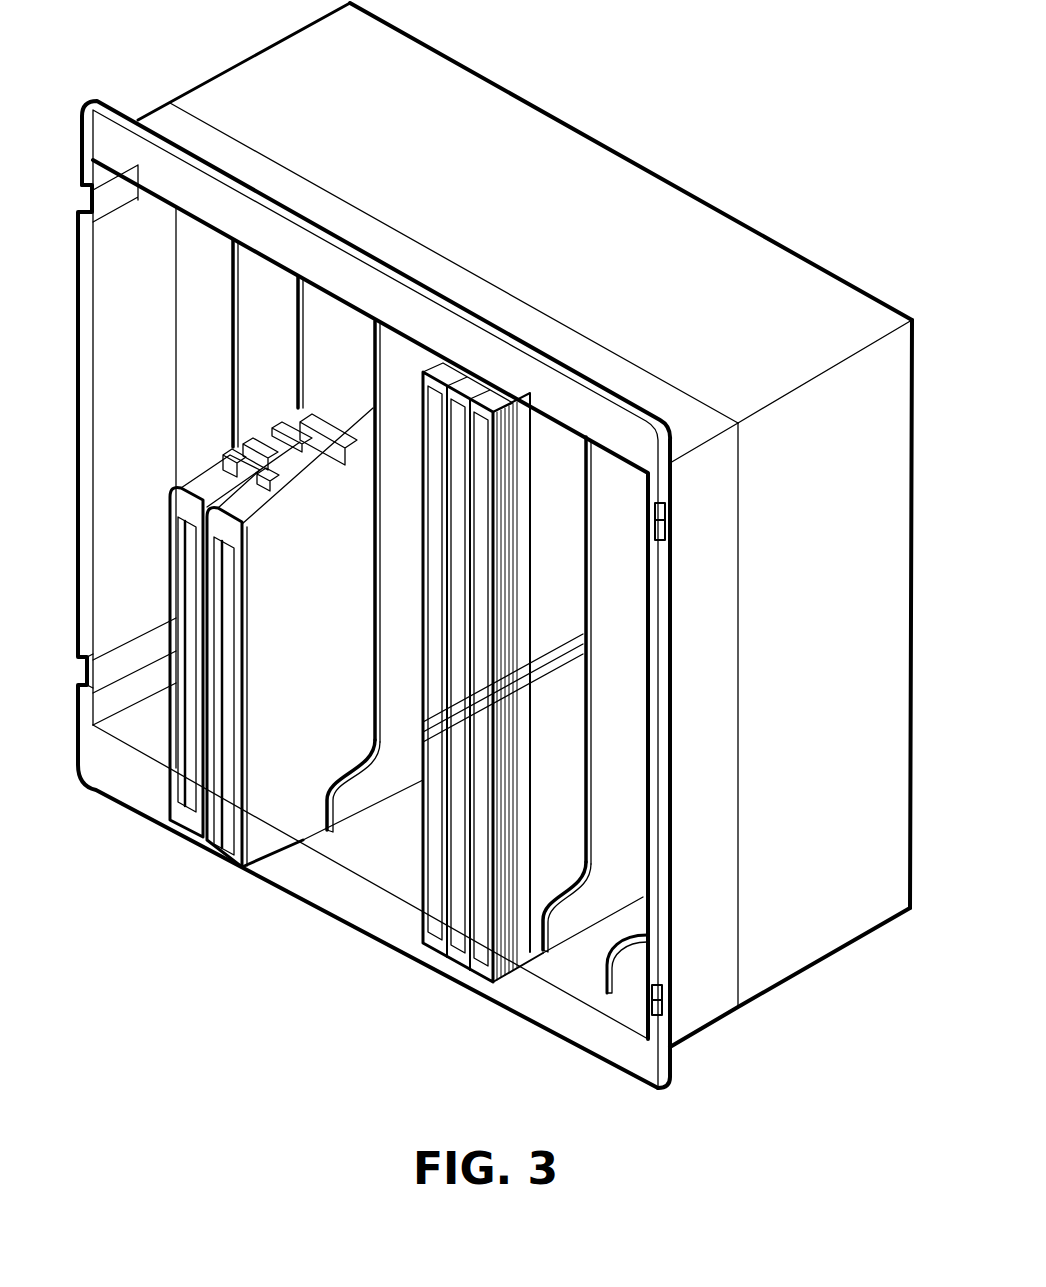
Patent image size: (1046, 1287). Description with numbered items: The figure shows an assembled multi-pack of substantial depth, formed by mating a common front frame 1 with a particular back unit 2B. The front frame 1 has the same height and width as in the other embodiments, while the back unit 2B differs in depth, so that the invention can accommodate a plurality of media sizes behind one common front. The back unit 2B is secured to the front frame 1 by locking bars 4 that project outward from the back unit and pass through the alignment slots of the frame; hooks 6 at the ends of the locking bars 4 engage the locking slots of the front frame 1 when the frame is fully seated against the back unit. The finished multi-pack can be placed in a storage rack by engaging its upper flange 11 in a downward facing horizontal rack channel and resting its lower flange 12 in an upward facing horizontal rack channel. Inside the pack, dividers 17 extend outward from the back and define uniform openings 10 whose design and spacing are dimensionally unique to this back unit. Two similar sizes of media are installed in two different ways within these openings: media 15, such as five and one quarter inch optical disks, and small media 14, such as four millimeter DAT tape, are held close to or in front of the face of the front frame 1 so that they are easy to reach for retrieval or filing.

The front frame 1 is at (723, 711).
The back unit 2B is at (822, 681).
The locking bar 4 is at (112, 668).
The hook 6 is at (662, 1000).
The uniform opening 10 is at (336, 325).
The upper flange 11 is at (207, 194).
The lower flange 12 is at (382, 920).
The small media 14 is at (438, 534).
The media type 15 is at (226, 824).
The divider 17 is at (362, 800).